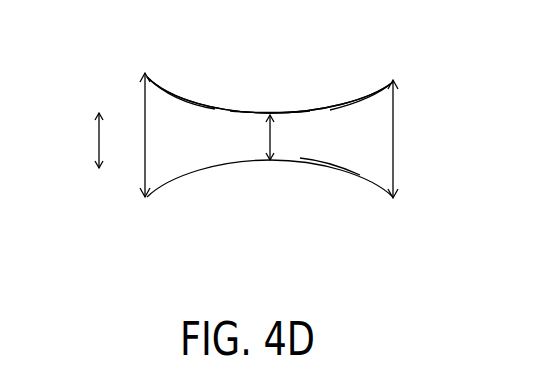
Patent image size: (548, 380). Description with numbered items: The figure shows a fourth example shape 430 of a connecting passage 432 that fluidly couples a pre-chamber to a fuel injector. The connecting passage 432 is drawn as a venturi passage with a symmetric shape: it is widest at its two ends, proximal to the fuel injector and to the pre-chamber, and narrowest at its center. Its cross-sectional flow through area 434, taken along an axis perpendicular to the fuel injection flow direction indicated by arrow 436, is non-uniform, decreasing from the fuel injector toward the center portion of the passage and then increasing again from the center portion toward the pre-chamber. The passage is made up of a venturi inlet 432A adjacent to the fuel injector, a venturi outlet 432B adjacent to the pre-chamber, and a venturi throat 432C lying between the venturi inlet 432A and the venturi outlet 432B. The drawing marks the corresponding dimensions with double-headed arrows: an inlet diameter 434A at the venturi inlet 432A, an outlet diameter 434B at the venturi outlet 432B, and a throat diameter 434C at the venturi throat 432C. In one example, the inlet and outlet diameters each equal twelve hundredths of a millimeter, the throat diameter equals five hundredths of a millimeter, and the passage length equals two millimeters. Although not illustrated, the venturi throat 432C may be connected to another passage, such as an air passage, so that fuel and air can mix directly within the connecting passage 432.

The fourth example shape 430 is at (373, 23).
The connecting passage 432 is at (393, 80).
The venturi inlet 432A is at (379, 100).
The venturi outlet 432B is at (163, 106).
The venturi throat 432C is at (277, 110).
The cross-sectional flow through area 434 is at (97, 145).
The inlet diameter 434A is at (395, 100).
The outlet diameter 434B is at (144, 107).
The throat diameter 434C is at (267, 133).
The arrow 436 is at (326, 145).